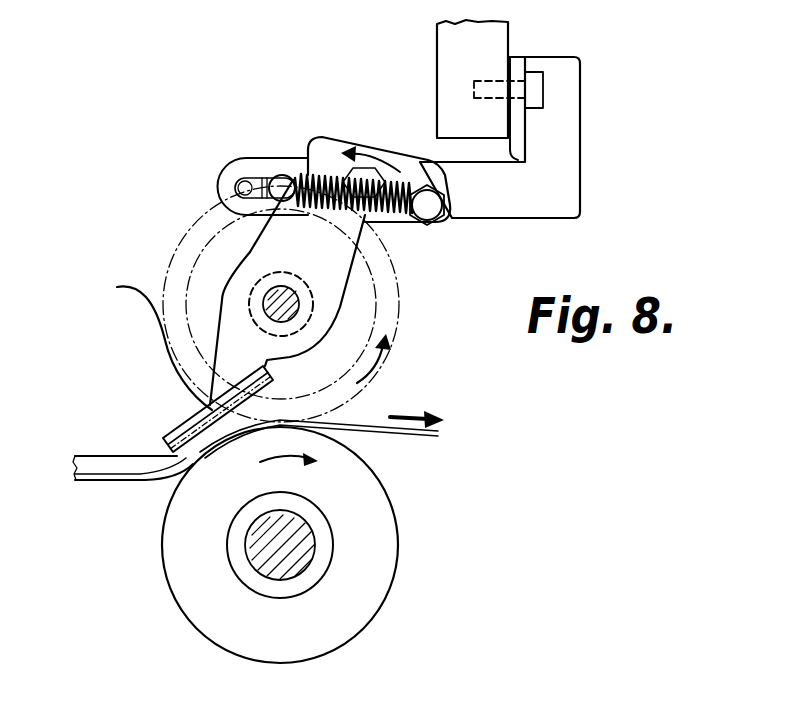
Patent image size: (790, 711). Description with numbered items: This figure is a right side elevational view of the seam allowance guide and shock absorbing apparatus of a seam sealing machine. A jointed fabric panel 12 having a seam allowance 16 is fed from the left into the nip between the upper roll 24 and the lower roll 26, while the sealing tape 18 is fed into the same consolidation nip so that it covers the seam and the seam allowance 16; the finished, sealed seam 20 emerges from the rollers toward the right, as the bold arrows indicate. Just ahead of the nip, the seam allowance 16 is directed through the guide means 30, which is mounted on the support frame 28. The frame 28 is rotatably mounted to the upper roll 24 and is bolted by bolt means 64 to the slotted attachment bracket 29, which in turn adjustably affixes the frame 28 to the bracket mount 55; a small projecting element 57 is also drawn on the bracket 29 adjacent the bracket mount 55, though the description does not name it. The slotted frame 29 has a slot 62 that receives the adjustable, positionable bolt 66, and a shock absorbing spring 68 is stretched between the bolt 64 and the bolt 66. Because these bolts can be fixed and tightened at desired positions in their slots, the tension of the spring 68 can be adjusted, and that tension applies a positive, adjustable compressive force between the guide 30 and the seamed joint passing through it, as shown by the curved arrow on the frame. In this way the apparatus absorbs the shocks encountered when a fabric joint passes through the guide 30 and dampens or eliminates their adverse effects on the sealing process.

The fabric panel 12 is at (95, 482).
The seam allowance 16 is at (118, 460).
The sealing tape 18 is at (140, 298).
The sealed seam 20 is at (370, 430).
The upper roll 24 is at (193, 227).
The lower roll 26 is at (372, 538).
The support frame 28 is at (317, 248).
The slotted attachment bracket 29 is at (522, 190).
The seam allowance guide means 30 is at (185, 425).
The bracket mount 55 is at (455, 65).
The plunger 57 is at (533, 90).
The slot 62 is at (254, 180).
The bolt means 64 is at (428, 222).
The bolt 66 is at (279, 187).
The spring 68 is at (321, 190).